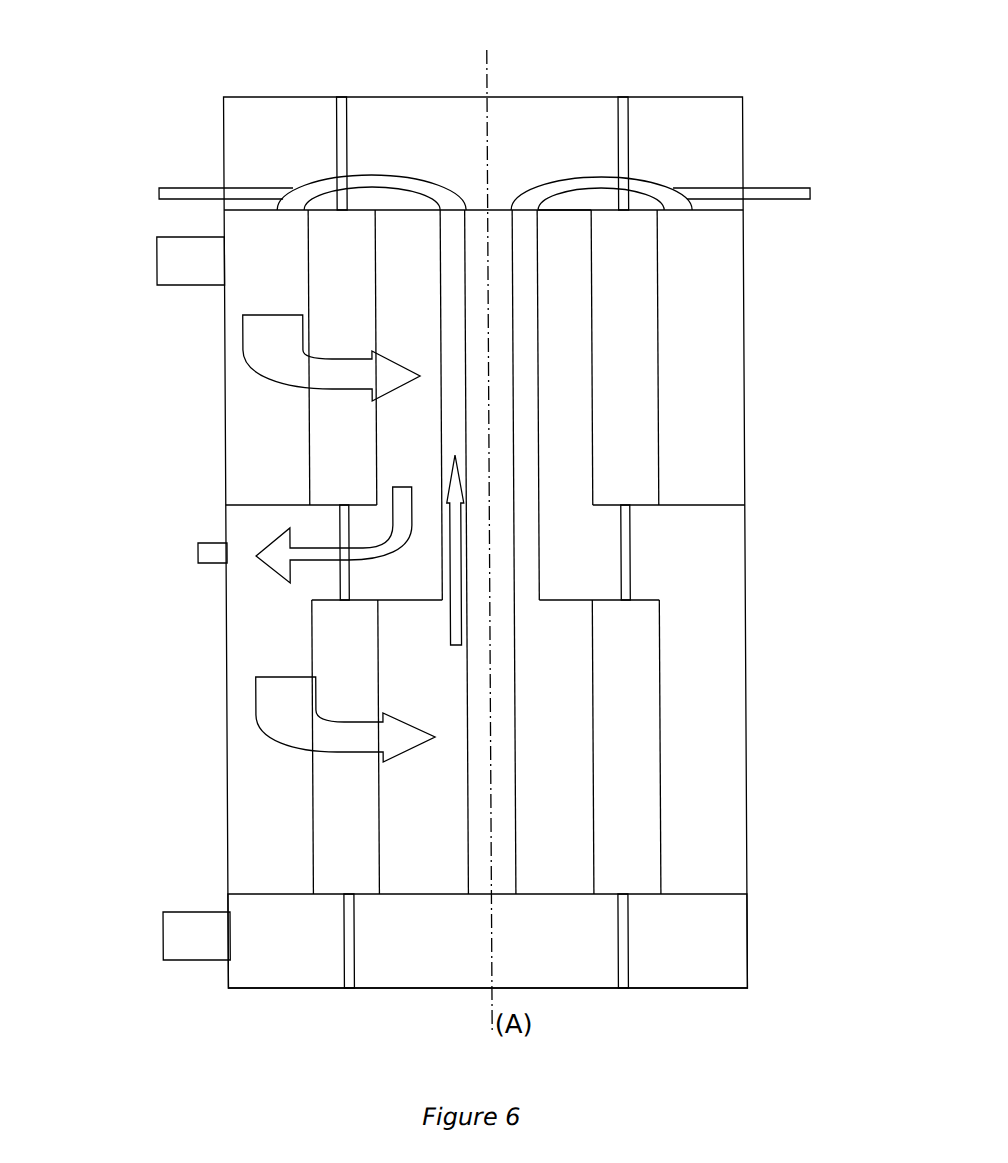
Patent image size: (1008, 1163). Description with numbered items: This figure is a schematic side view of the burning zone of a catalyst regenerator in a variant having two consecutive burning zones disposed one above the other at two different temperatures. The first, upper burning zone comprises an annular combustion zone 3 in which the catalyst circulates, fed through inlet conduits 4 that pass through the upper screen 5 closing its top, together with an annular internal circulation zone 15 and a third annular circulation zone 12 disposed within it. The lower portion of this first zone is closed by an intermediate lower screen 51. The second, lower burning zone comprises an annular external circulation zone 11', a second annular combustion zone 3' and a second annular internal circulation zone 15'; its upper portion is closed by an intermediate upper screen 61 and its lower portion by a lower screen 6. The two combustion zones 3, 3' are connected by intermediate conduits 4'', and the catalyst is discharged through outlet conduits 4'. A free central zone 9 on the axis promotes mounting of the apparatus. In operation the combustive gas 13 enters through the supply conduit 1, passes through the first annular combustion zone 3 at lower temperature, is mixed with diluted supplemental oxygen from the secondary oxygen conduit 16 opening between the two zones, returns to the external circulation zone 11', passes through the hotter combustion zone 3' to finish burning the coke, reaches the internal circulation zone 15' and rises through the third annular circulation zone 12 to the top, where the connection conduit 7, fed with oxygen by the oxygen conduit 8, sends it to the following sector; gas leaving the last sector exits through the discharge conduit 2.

The supply conduit 1 is at (186, 257).
The discharge conduit 2 is at (185, 950).
The annular combustion zone 3 is at (717, 357).
The second annular combustion zone 3' is at (724, 747).
The inlet conduits 4 is at (591, 115).
The outlet conduits 4' is at (599, 917).
The intermediate conduits 4'' is at (598, 552).
The upper screen 5 is at (561, 208).
The lower screen 6 is at (410, 892).
The connection conduit 7 is at (377, 187).
The oxygen conduit 8 is at (189, 187).
The central zone 9 is at (484, 657).
The annular external circulation zone 11' is at (244, 747).
The third annular circulation zone 12 is at (450, 438).
The combustive gas 13 is at (276, 352).
The annular internal circulation zone 15 is at (693, 405).
The second annular internal circulation zone 15' is at (684, 552).
The secondary oxygen conduit 16 is at (199, 552).
The intermediate lower screen 51 is at (255, 507).
The intermediate upper screen 61 is at (557, 602).